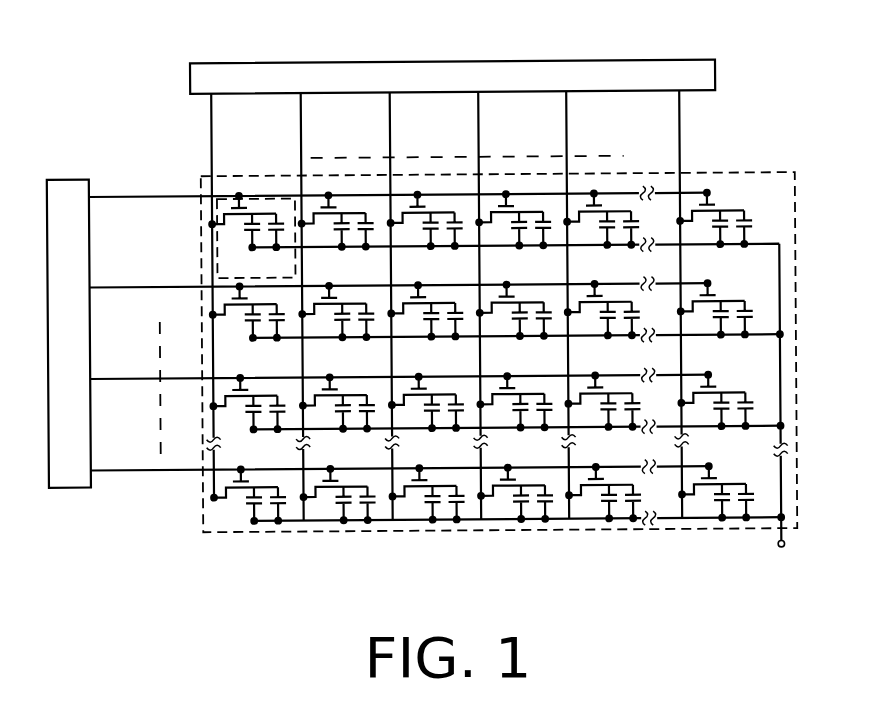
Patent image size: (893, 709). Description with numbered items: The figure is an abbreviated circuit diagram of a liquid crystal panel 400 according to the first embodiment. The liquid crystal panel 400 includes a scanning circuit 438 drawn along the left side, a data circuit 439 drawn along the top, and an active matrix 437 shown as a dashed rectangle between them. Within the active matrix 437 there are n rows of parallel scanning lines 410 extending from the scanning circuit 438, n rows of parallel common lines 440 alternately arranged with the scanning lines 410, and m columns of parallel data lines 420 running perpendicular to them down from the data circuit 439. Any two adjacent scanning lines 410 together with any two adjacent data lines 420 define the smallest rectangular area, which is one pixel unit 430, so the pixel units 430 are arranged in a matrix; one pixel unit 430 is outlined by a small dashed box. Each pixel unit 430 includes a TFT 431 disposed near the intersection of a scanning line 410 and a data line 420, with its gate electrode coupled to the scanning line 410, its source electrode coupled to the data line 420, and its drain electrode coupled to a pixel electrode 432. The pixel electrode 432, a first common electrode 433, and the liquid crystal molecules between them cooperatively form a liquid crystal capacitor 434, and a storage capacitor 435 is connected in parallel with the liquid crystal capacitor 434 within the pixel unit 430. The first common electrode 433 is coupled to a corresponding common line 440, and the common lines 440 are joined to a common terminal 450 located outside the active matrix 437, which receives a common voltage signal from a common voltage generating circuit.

The liquid crystal panel 400 is at (441, 33).
The scanning line 410 is at (122, 194).
The data line 420 is at (213, 126).
The pixel unit 430 is at (214, 222).
The TFT 431 is at (212, 484).
The pixel electrode 432 is at (420, 491).
The first common electrode 433 is at (433, 503).
The liquid crystal capacitor 434 is at (253, 497).
The storage capacitor 435 is at (280, 498).
The active matrix 437 is at (700, 532).
The scanning circuit 438 is at (67, 487).
The data circuit 439 is at (718, 91).
The common line 440 is at (700, 248).
The common terminal 450 is at (784, 547).